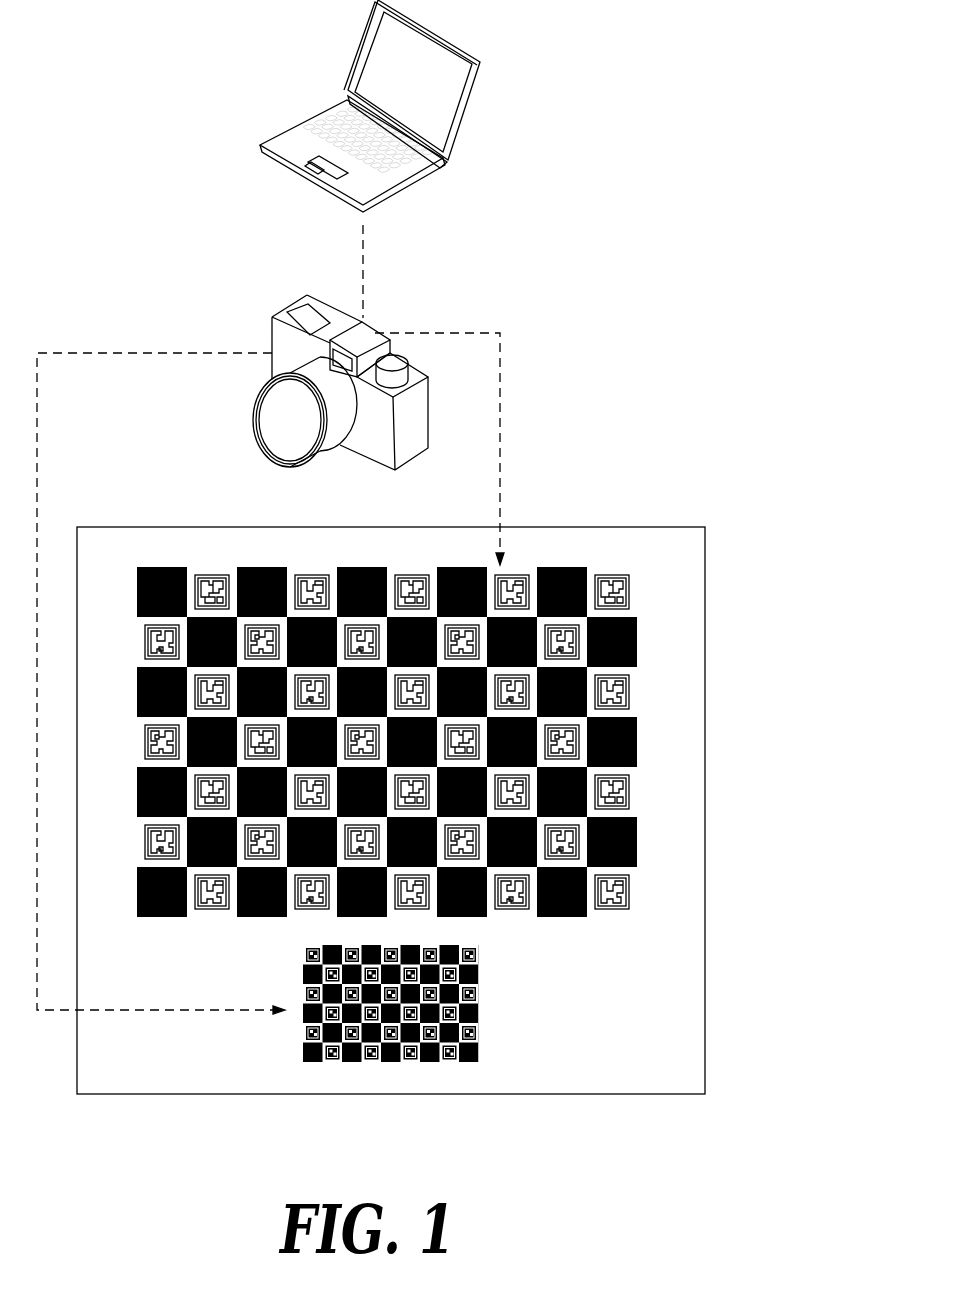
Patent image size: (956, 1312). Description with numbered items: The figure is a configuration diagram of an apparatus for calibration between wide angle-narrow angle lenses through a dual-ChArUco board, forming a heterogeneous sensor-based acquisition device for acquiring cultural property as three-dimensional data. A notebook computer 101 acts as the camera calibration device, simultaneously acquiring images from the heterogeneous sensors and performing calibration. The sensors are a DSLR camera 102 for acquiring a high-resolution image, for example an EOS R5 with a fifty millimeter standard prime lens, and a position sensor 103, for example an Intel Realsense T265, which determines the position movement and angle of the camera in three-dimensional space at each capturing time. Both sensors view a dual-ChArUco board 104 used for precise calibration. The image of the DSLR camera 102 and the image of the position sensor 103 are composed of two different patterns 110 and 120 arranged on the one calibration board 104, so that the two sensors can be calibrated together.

The notebook computer 101 is at (295, 132).
The DSLR camera 102 is at (265, 412).
The position sensor 103 is at (372, 330).
The dual-ChArUco board 104 is at (625, 527).
The first pattern 110 is at (638, 650).
The second pattern 120 is at (428, 1063).